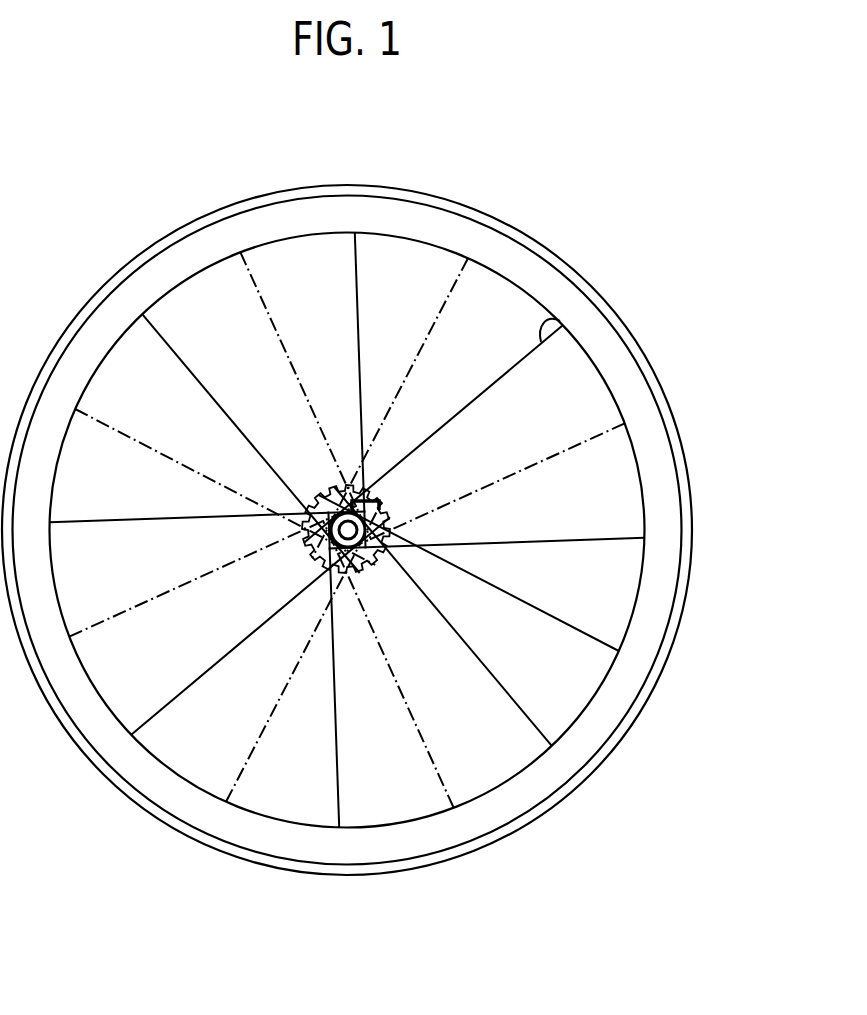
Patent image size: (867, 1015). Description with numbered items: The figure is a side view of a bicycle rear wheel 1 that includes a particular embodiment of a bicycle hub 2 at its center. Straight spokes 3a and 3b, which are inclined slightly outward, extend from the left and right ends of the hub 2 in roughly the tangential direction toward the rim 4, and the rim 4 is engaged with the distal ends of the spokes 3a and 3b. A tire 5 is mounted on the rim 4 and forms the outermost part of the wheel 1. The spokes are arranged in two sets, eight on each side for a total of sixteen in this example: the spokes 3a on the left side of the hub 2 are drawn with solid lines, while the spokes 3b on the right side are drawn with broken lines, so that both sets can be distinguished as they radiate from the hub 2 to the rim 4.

The rear wheel 1 is at (389, 497).
The hub 2 is at (372, 514).
The spokes 3a is at (557, 318).
The spokes 3b is at (448, 310).
The rim 4 is at (662, 461).
The tire 5 is at (694, 530).